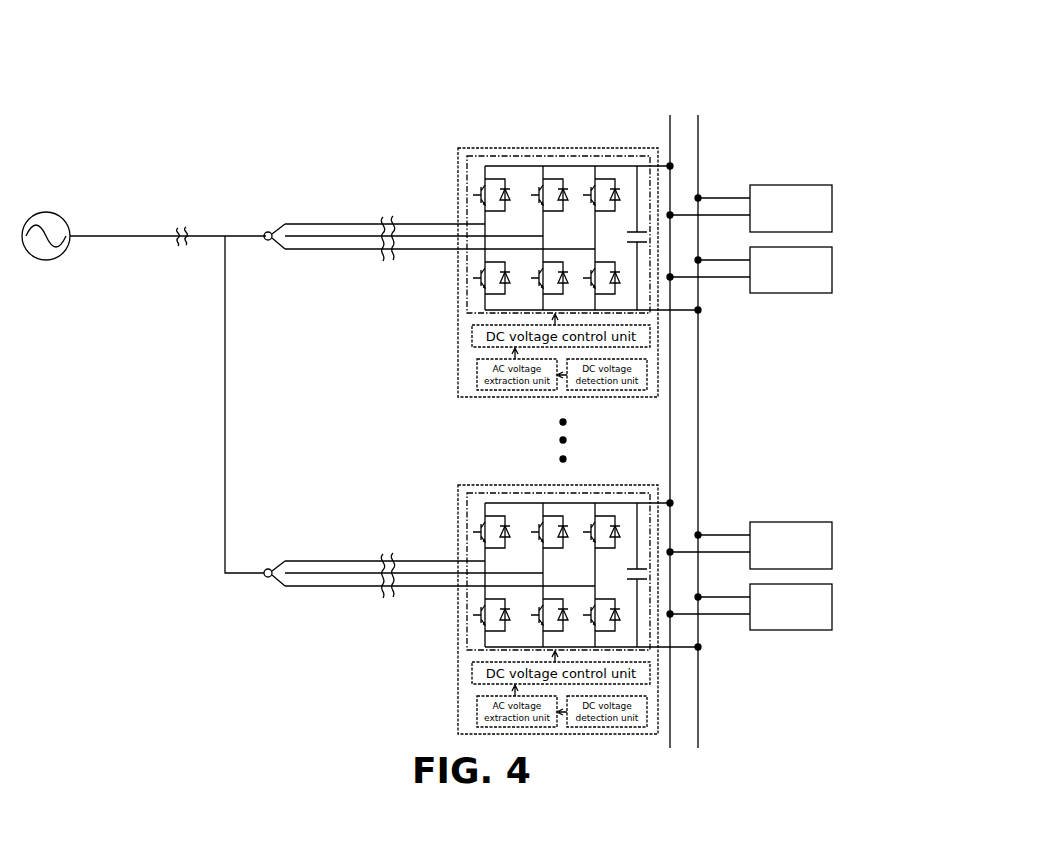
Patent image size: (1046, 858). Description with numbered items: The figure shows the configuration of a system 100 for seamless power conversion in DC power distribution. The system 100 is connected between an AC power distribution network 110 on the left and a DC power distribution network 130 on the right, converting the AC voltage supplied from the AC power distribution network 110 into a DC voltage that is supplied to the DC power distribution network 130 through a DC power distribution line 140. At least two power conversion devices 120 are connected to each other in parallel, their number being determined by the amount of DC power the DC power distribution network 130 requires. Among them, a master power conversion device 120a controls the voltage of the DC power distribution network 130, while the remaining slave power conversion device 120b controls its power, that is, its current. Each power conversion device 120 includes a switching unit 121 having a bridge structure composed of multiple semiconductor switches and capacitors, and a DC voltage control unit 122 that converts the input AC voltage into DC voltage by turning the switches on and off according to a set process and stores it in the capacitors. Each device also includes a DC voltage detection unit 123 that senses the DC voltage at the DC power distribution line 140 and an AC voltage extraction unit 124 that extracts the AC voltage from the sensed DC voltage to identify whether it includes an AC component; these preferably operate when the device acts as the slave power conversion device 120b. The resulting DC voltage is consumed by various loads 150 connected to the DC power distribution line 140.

The system for seamless power conversion in DC power distribution 100 is at (112, 50).
The AC power distribution network 110 is at (56, 211).
The power conversion device 120 is at (553, 139).
The master power conversion device 120a is at (458, 180).
The slave power conversion device 120b is at (458, 517).
The switching unit 121 is at (490, 493).
The DC voltage control unit 122 is at (466, 669).
The DC voltage detection unit 123 is at (739, 713).
The AC voltage extraction unit 124 is at (472, 707).
The DC power distribution network 130 is at (695, 85).
The DC power distribution line 140 is at (698, 151).
The loads 150 is at (832, 205).